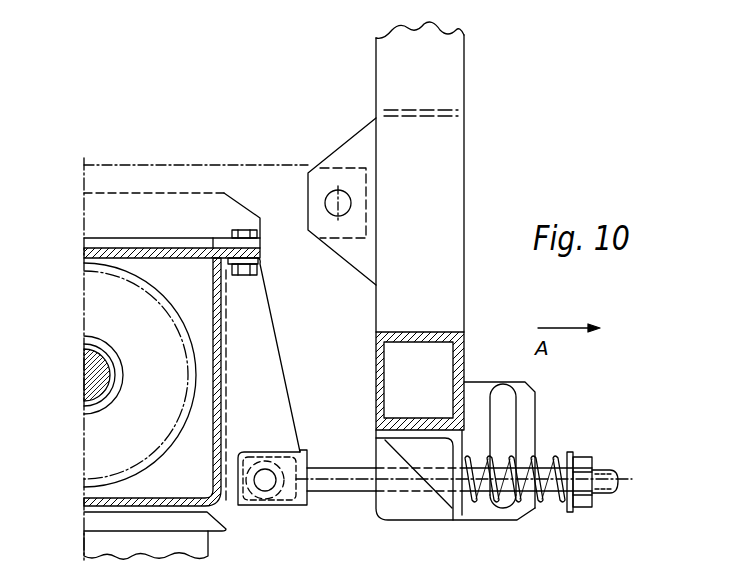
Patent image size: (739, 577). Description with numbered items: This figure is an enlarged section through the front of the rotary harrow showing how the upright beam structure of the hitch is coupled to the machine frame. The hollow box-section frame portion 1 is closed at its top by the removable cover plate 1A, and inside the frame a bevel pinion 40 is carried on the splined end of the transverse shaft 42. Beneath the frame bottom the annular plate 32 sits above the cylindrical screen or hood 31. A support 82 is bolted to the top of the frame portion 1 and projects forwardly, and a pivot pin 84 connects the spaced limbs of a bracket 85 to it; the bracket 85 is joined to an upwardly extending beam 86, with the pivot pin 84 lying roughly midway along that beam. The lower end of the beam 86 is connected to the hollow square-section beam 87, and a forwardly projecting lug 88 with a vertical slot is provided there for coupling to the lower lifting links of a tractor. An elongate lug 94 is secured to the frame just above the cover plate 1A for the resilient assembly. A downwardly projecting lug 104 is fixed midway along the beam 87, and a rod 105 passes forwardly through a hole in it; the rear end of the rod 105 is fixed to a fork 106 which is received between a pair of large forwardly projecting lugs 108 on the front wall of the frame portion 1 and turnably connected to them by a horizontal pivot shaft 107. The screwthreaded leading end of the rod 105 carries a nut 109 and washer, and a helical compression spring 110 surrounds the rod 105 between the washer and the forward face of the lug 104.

The hollow box-section frame portion 1 is at (222, 358).
The removable cover plate 1A is at (84, 253).
The cylindrical screen or hood 31 is at (92, 543).
The annular plate 32 is at (92, 512).
The bevel pinion 40 is at (157, 302).
The shaft 42 is at (112, 369).
The support 82 is at (163, 170).
The pivot pin 84 is at (356, 203).
The bracket 85 is at (364, 137).
The upwardly extending beam 86 is at (466, 73).
The beam 87 is at (376, 343).
The lug 88 is at (535, 402).
The elongate lug 94 is at (84, 214).
The downwardly projecting lug 104 is at (457, 512).
The rod 105 is at (345, 493).
The fork 106 is at (304, 454).
The pivot shaft 107 is at (268, 494).
The forwardly projecting lug 108 is at (280, 402).
The nut 109 is at (584, 462).
The helical compression spring 110 is at (553, 499).